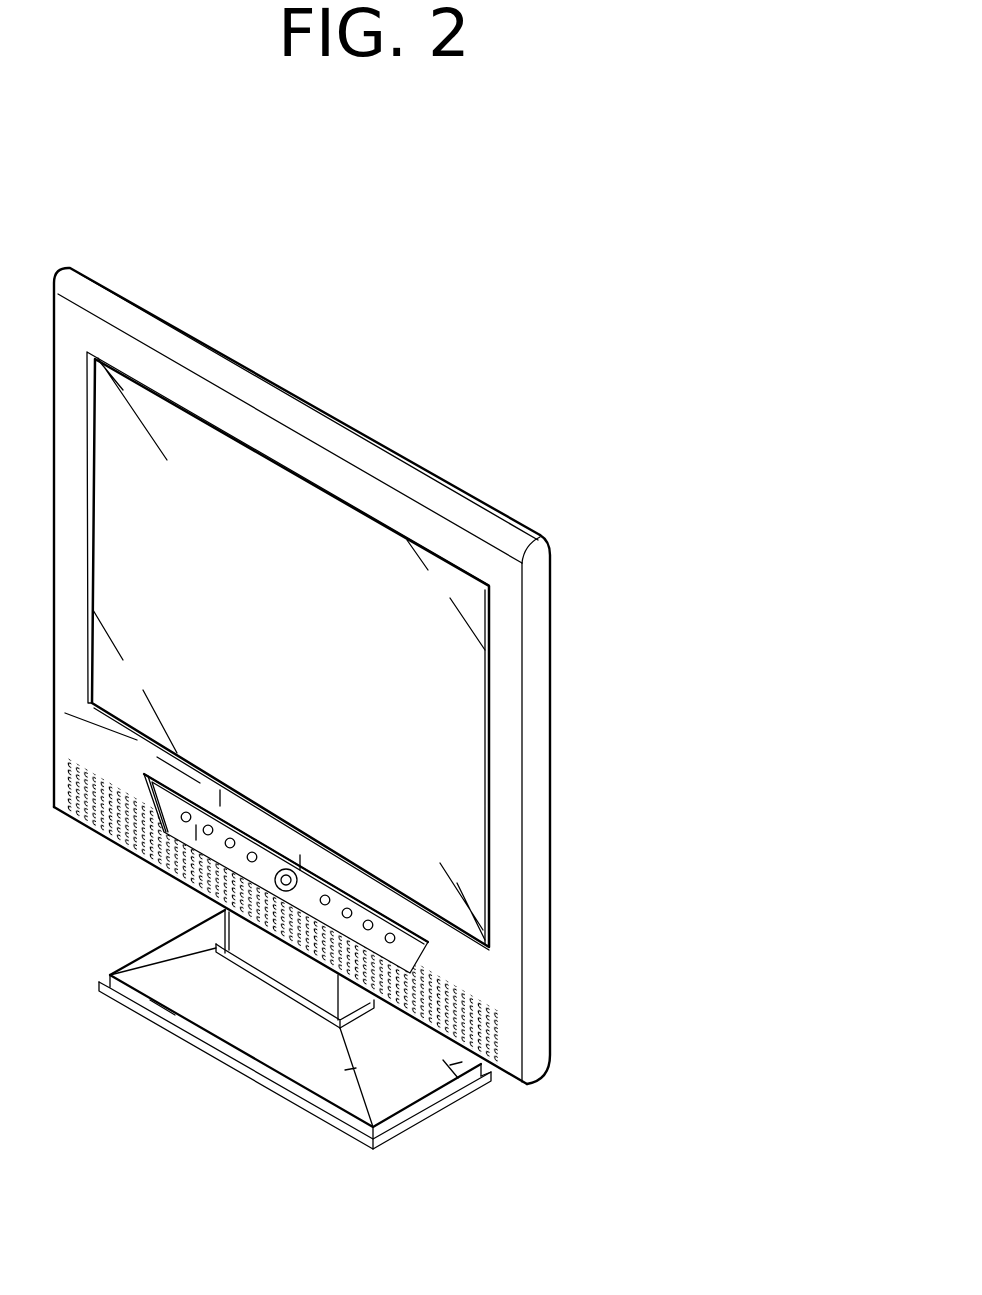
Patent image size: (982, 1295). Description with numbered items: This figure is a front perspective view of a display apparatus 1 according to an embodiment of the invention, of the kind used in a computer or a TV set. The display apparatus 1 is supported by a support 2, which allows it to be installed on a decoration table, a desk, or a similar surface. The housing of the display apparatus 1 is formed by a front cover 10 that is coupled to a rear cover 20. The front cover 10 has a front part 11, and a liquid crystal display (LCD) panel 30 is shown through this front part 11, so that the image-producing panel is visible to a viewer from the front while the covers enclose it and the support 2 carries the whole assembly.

The display apparatus 1 is at (454, 726).
The support 2 is at (386, 1112).
The front cover 10 is at (342, 676).
The front part 11 is at (533, 982).
The rear cover 20 is at (512, 514).
The liquid crystal display (LCD) panel 30 is at (473, 868).